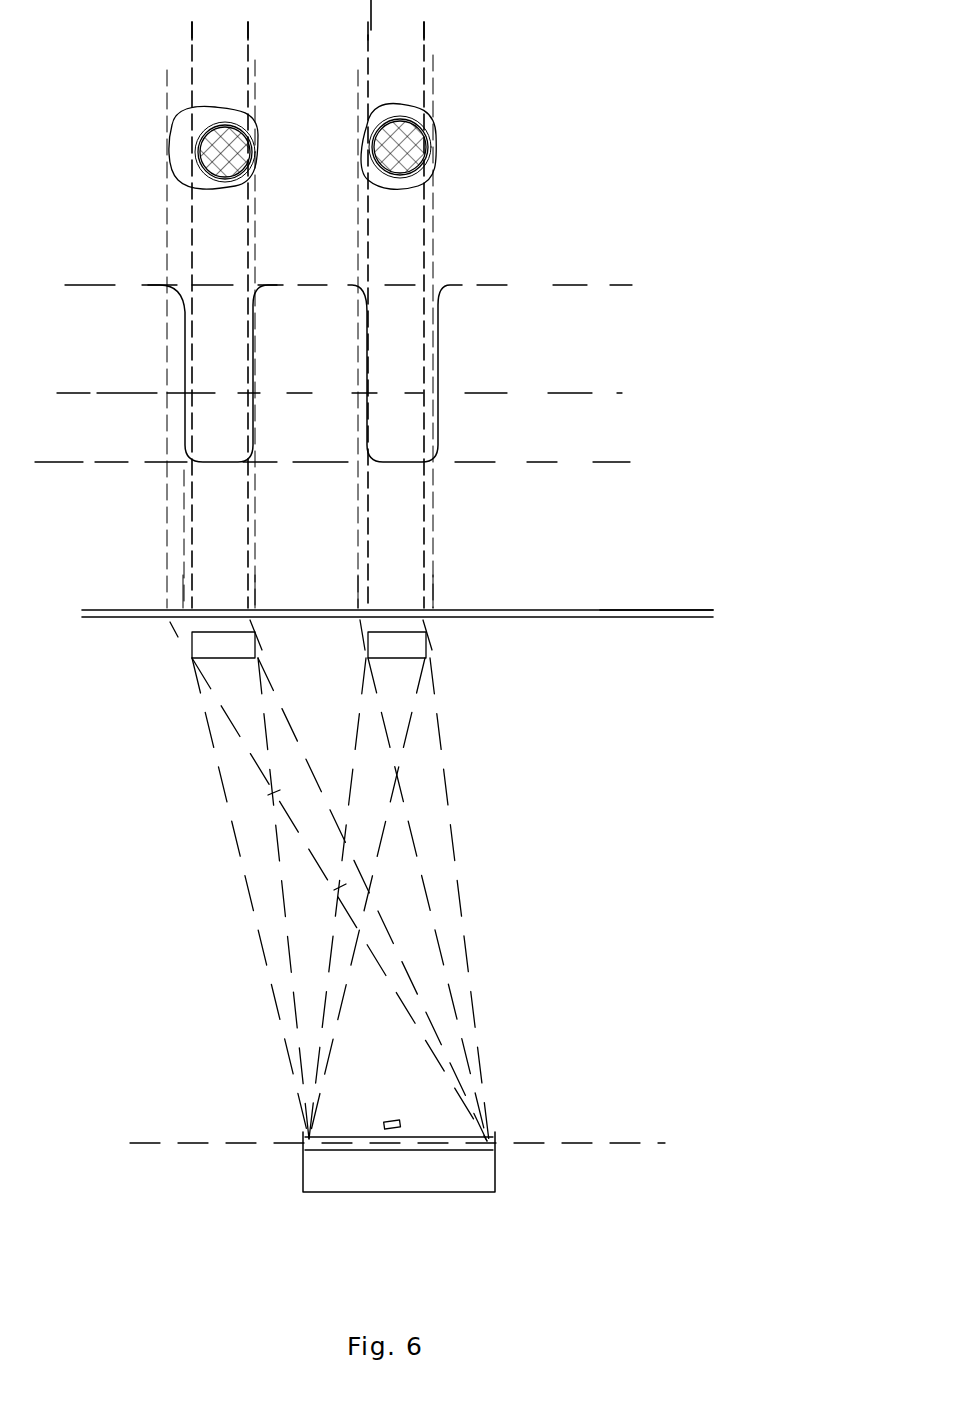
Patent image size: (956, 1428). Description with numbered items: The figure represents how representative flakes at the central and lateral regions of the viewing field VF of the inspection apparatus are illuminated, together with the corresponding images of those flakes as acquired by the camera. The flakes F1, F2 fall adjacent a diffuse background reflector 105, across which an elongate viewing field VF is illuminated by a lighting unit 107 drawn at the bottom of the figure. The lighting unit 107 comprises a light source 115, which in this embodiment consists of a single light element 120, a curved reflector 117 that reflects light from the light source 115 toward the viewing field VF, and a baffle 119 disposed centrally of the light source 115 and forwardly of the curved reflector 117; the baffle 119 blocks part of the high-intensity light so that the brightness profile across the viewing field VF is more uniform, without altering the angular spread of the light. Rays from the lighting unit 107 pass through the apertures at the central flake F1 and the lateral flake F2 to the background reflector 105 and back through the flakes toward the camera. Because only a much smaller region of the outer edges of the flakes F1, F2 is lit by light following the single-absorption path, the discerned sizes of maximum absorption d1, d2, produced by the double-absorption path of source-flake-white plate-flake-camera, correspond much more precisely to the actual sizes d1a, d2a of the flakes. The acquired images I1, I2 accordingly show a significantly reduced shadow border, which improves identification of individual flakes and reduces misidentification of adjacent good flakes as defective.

The diffuse background reflector 105 is at (679, 611).
The lighting unit 107 is at (433, 1200).
The light source 115 is at (376, 1147).
The curved reflector 117 is at (497, 1167).
The baffle 119 is at (400, 1125).
The light element 120 is at (343, 1134).
The viewing field VF is at (637, 619).
The flake at central region F1 is at (428, 645).
The flake at lateral region F2 is at (195, 662).
The image of central flake I1 is at (447, 117).
The image of lateral flake I2 is at (172, 130).
The discerned size of maximum absorption of central flake d1 is at (327, 33).
The discerned size of maximum absorption of lateral flake d2 is at (148, 35).
The actual size of central flake d1a is at (322, 593).
The actual size of lateral flake d2a is at (255, 593).